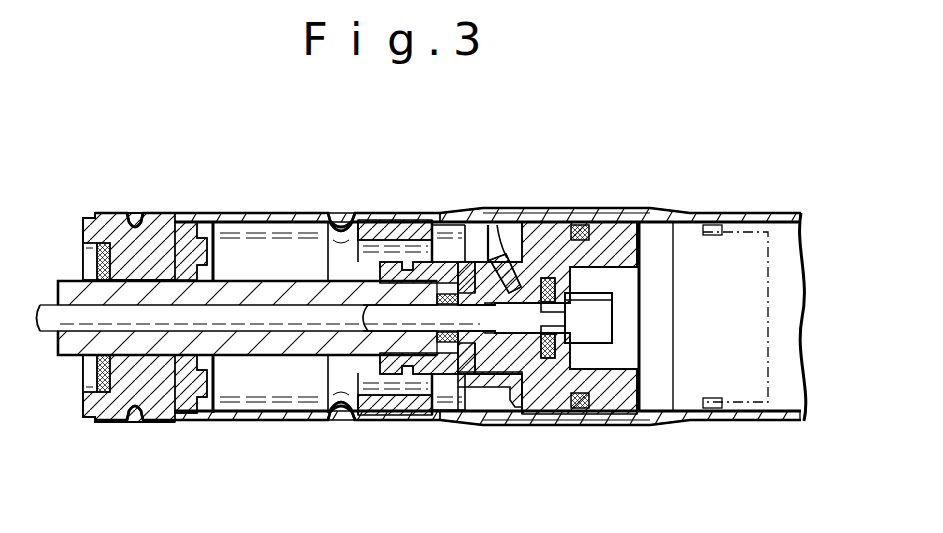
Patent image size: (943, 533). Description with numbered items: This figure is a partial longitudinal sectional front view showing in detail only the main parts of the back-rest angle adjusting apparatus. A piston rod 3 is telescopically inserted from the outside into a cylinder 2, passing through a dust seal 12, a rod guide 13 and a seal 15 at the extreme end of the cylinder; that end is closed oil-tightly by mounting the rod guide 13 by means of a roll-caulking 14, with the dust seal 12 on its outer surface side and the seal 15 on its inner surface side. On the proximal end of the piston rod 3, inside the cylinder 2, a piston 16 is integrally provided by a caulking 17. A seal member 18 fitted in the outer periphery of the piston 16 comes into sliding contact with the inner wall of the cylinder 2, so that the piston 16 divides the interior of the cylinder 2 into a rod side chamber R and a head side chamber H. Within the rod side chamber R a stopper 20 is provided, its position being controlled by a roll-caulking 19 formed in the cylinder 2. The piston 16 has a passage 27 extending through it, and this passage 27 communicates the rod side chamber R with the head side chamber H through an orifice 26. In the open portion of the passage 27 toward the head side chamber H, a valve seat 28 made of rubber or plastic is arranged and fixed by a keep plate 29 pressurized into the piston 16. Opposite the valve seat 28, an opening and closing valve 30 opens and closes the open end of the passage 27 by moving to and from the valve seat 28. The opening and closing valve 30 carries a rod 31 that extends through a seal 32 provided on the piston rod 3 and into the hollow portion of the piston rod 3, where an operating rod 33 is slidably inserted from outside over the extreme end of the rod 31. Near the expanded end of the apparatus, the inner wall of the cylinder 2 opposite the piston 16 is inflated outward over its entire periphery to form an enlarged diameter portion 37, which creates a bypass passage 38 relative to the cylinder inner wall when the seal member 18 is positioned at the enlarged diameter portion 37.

The cylinder 2 is at (268, 421).
The piston rod 3 is at (268, 282).
The dust seal 12 is at (92, 258).
The rod guide 13 is at (134, 222).
The roll-caulking 14 is at (137, 421).
The seal 15 is at (190, 236).
The piston 16 is at (748, 232).
The caulking 17 is at (402, 268).
The seal member 18 is at (578, 225).
The roll-caulking 19 is at (347, 421).
The stopper 20 is at (368, 240).
The orifice 26 is at (527, 226).
The passage 27 is at (501, 226).
The valve seat 28 is at (545, 382).
The keep plate 29 is at (547, 360).
The opening and closing valve 30 is at (614, 313).
The rod 31 is at (383, 320).
The seal 32 is at (437, 262).
The operating rod 33 is at (47, 335).
The enlarged diameter portion 37 is at (603, 220).
The bypass passage 38 is at (586, 411).
The rod side chamber R is at (465, 400).
The head side chamber H is at (790, 373).